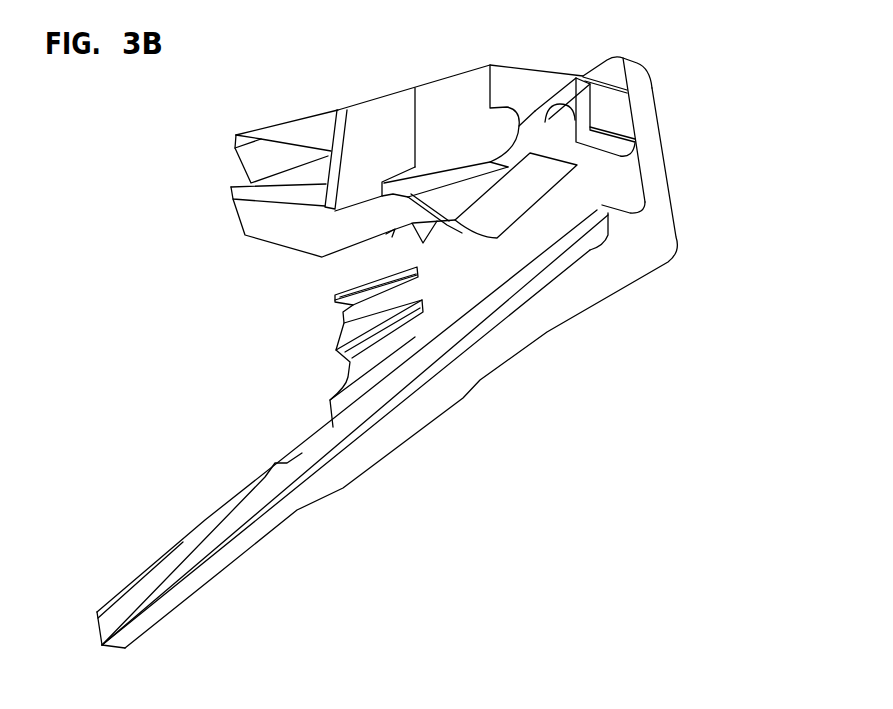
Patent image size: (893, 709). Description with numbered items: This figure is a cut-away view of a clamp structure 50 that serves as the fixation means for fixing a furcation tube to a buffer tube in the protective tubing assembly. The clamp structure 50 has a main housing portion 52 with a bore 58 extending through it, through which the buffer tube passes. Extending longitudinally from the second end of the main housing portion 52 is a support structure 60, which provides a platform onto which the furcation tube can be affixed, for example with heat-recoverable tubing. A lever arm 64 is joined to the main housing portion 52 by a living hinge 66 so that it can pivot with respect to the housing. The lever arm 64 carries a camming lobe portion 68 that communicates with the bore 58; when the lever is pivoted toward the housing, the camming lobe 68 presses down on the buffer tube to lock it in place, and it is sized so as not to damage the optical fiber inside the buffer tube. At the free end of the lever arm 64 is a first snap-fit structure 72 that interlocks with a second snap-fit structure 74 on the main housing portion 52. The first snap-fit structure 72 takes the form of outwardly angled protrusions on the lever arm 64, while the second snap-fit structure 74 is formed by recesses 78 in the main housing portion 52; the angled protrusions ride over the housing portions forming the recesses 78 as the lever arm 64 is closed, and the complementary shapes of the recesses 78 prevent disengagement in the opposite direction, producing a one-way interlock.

The clamp structure 50 is at (700, 166).
The main housing portion 52 is at (645, 87).
The bore 58 is at (600, 187).
The support structure 60 is at (218, 562).
The lever arm 64 is at (383, 100).
The living hinge 66 is at (536, 138).
The camming lobe portion 68 is at (461, 233).
The first snap-fit structure 72 is at (249, 215).
The second snap-fit structure 74 is at (350, 322).
The recesses 78 is at (357, 357).